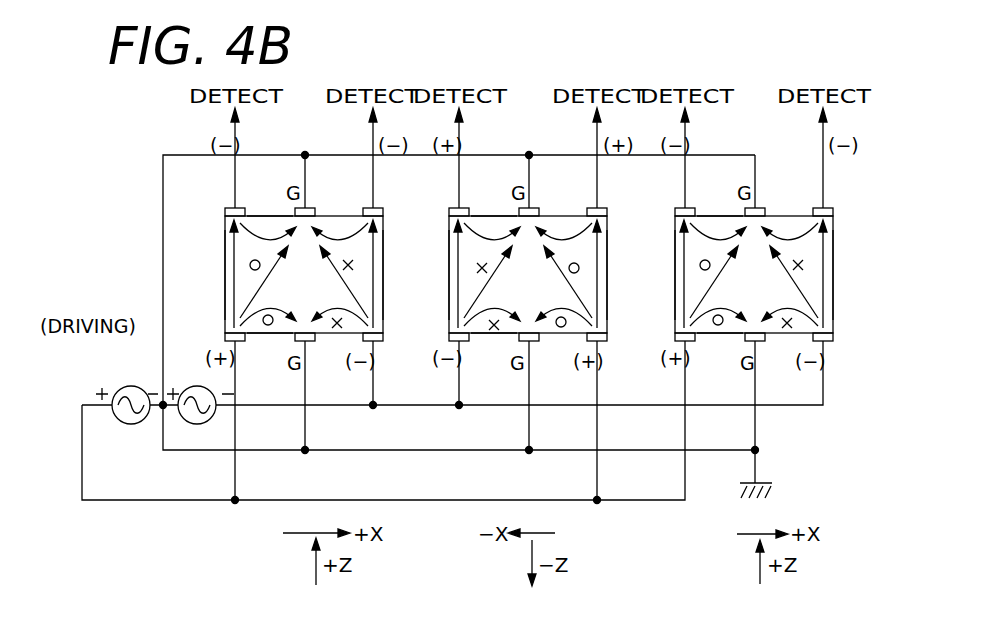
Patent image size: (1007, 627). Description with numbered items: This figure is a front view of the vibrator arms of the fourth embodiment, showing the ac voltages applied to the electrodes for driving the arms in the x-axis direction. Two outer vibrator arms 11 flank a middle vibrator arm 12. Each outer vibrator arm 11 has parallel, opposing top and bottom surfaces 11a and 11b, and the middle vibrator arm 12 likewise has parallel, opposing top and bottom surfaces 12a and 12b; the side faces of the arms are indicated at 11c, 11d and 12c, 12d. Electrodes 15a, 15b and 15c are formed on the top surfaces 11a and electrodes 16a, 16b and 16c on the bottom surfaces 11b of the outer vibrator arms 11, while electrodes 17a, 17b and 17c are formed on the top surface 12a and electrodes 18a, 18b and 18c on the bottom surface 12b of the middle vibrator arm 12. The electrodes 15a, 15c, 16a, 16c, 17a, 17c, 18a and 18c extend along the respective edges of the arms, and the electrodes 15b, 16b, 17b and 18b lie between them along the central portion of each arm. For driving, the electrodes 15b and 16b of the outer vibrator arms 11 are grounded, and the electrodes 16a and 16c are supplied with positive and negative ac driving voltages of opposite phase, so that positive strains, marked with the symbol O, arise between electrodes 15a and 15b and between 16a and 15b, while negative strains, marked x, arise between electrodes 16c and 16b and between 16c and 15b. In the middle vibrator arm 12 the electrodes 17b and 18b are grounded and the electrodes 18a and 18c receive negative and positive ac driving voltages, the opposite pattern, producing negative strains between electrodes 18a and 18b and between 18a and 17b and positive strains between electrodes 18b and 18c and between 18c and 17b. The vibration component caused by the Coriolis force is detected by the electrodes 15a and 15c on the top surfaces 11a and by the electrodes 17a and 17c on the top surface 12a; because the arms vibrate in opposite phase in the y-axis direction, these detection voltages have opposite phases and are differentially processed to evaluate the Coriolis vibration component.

The outer vibrator arm 11 is at (383, 250).
The top surface of outer vibrator arm 11a is at (282, 215).
The bottom surface of outer vibrator arm 11b is at (268, 341).
The left side surface of piezoelectric element 11c is at (225, 255).
The right side surface of piezoelectric element 11d is at (383, 325).
The middle vibrator arm 12 is at (607, 250).
The top surface of middle vibrator arm 12a is at (565, 216).
The bottom surface of middle vibrator arm 12b is at (492, 341).
The left side surface of piezoelectric element 12c is at (449, 268).
The right side surface of piezoelectric element 12d is at (607, 325).
The electrode 15a is at (240, 207).
The electrode 15b is at (310, 207).
The electrode 15c is at (370, 207).
The electrode 16a is at (230, 341).
The electrode 16b is at (320, 341).
The electrode 16c is at (380, 341).
The electrode 17a is at (456, 208).
The electrode 17b is at (520, 208).
The electrode 17c is at (602, 208).
The electrode 18a is at (457, 341).
The electrode 18b is at (542, 341).
The electrode 18c is at (600, 341).